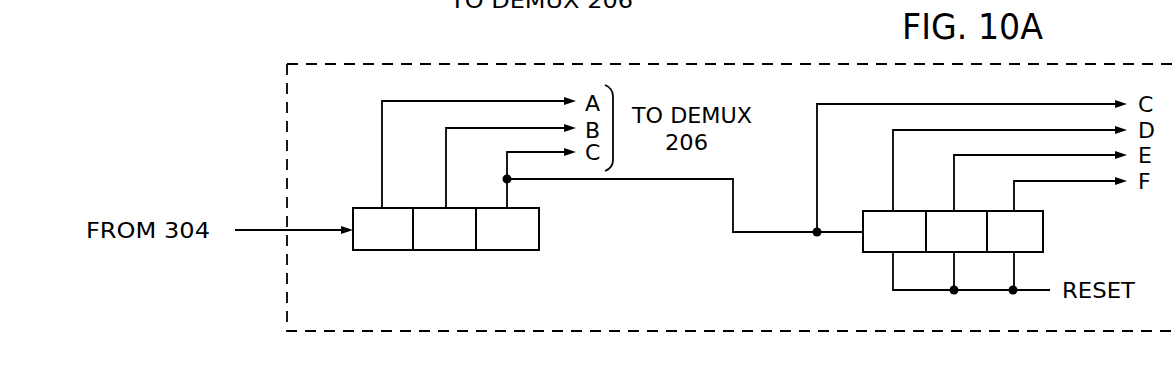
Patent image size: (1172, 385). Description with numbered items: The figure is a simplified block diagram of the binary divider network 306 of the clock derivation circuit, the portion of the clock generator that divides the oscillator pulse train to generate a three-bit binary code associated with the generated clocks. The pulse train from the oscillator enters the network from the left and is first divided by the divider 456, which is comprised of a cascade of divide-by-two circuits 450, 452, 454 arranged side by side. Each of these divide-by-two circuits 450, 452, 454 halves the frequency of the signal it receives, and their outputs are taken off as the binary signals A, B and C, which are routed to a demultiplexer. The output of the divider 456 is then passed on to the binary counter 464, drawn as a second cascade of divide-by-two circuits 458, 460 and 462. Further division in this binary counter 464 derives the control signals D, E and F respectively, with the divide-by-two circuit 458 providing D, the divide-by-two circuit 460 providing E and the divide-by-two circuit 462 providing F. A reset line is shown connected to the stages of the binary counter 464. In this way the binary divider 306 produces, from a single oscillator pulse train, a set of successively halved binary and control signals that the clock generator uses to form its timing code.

The binary divider network 306 is at (278, 102).
The divide-by-two circuit 450 is at (364, 208).
The divide-by-two circuit 452 is at (425, 208).
The divide-by-two circuit 454 is at (492, 208).
The divider 456 is at (550, 249).
The divide-by-two circuit 458 is at (867, 211).
The divide-by-two circuit 460 is at (942, 211).
The divide-by-two circuit 462 is at (1043, 233).
The binary counter 464 is at (852, 261).